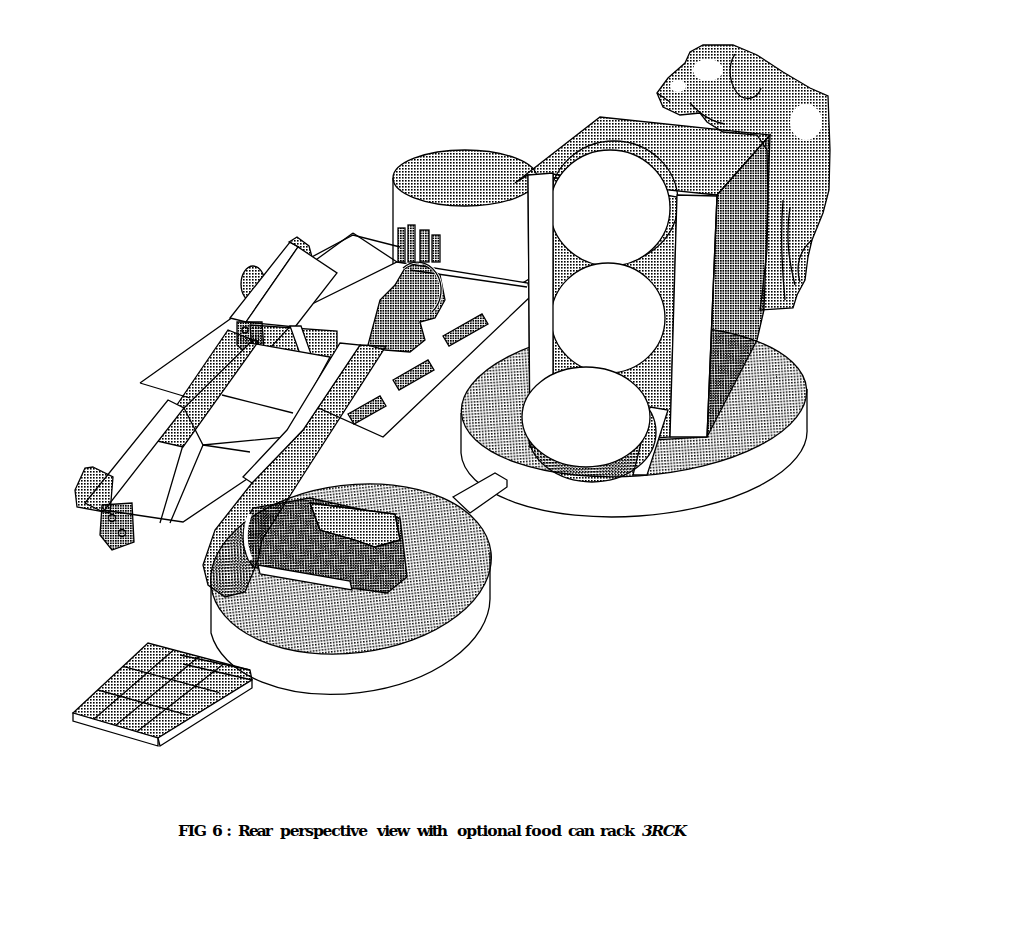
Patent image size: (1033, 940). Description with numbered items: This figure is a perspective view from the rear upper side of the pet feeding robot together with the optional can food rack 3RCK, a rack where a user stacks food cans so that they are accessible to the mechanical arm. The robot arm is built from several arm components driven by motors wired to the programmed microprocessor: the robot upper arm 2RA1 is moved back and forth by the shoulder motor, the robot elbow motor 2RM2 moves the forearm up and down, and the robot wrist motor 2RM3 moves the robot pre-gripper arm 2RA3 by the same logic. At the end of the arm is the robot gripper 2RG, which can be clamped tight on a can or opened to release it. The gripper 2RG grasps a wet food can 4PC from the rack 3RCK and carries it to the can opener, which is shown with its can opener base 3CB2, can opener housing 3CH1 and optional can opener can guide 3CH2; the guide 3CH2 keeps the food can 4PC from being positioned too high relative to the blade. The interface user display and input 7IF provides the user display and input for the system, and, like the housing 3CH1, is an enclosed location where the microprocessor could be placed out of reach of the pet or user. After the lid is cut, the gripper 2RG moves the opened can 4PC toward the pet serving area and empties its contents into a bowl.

The robot upper arm 2RA1 is at (327, 587).
The robot pre-gripper arm 2RA3 is at (253, 267).
The robot elbow motor 2RM2 is at (182, 480).
The robot wrist motor 2RM3 is at (338, 302).
The robot gripper 2RG is at (402, 253).
The can opener base 3CB2 is at (518, 507).
The can opener housing 3CH1 is at (737, 205).
The can opener can guide 3CH2 is at (515, 181).
The can food rack 3RCK is at (657, 350).
The wet food can 4PC is at (467, 177).
The interface user display and input 7IF is at (196, 668).